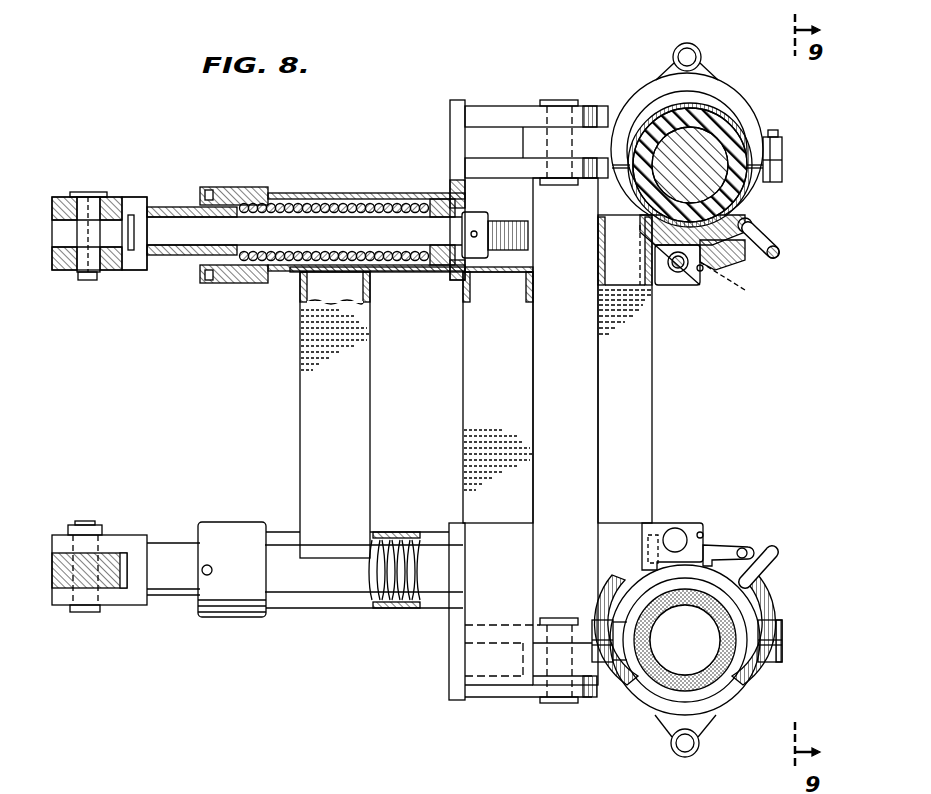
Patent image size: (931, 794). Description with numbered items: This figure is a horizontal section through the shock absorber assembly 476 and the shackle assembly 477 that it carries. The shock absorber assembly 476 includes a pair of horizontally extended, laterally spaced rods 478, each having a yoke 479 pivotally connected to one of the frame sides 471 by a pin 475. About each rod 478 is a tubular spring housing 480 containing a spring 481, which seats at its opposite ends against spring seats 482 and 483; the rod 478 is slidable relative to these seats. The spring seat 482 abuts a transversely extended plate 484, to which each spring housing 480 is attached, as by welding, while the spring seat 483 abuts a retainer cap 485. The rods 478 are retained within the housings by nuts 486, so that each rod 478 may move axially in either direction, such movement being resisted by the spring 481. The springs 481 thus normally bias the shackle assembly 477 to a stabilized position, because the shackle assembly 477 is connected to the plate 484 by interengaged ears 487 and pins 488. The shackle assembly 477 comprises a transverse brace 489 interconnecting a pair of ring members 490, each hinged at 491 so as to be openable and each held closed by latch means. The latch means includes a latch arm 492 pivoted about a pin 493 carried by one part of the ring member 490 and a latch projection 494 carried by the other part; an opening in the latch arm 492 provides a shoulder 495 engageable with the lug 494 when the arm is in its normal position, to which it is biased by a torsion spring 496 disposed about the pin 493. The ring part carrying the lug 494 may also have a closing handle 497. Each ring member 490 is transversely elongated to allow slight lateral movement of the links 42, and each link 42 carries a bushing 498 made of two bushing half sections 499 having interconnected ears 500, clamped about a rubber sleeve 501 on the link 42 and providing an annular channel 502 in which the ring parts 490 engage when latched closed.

The link 42 is at (722, 150).
The frame side 471 is at (122, 225).
The pin 475 is at (82, 193).
The shock absorber assembly 476 is at (282, 278).
The shackle assembly 477 is at (639, 72).
The rod 478 is at (300, 235).
The yoke 479 is at (140, 197).
The tubular spring housing 480 is at (340, 210).
The spring 481 is at (387, 272).
The spring seat 482 is at (442, 205).
The spring seat 483 is at (240, 193).
The transversely extended plate 484 is at (457, 112).
The retainer cap 485 is at (222, 188).
The nut 486 is at (472, 228).
The ear 487 is at (495, 112).
The pin 488 is at (560, 100).
The transverse brace 489 is at (641, 390).
The ring member 490 is at (655, 68).
The hinge 491 is at (692, 58).
The latch arm 492 is at (748, 548).
The pin 493 is at (672, 272).
The latch projection 494 is at (733, 265).
The shoulder 495 is at (748, 258).
The torsion spring 496 is at (695, 275).
The closing handle 497 is at (758, 236).
The bushing 498 is at (638, 112).
The bushing half section 499 is at (742, 202).
The ear 500 is at (784, 150).
The rubber sleeve 501 is at (636, 196).
The annular channel 502 is at (712, 114).